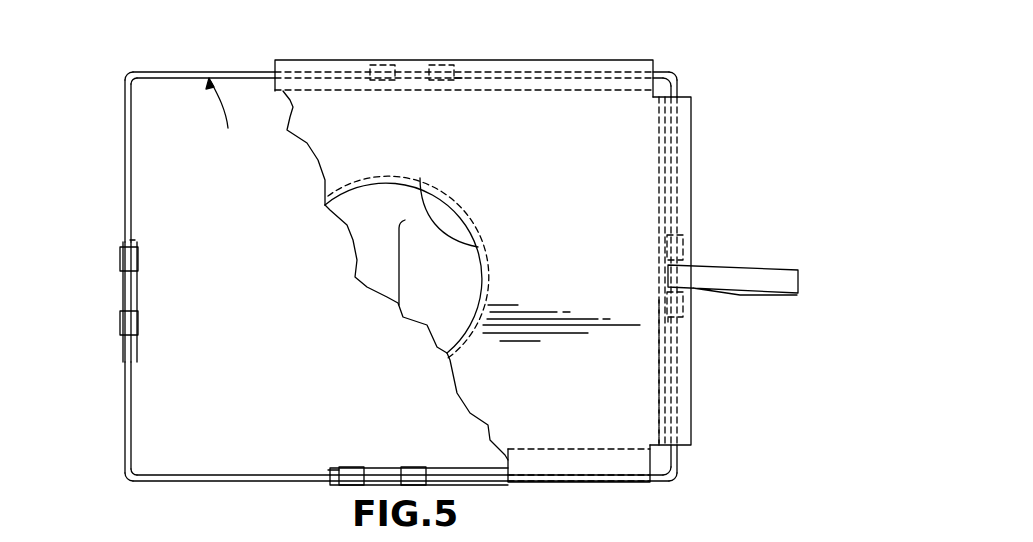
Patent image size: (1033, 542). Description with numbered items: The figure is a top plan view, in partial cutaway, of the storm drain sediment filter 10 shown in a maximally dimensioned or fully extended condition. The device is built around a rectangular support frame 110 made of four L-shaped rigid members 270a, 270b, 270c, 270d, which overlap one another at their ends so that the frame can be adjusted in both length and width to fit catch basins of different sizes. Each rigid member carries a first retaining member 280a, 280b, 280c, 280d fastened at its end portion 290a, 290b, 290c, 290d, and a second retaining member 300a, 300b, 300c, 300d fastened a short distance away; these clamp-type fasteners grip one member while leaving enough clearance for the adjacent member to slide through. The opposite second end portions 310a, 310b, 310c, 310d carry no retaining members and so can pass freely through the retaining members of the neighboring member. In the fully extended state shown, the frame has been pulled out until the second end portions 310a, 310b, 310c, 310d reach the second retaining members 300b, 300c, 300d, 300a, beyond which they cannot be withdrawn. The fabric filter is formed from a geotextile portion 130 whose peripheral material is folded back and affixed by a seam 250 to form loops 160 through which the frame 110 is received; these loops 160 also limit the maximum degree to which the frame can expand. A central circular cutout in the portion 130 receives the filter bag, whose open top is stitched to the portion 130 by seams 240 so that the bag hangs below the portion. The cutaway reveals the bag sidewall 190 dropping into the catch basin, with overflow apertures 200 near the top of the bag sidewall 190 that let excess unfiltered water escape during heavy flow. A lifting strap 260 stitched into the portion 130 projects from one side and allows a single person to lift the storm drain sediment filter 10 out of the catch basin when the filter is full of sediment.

The storm drain sediment filter 10 is at (718, 173).
The support frame 110 is at (677, 67).
The portion 130 is at (596, 291).
The loops 160 is at (688, 410).
The bag sidewall 190 is at (398, 200).
The overflow apertures 200 is at (467, 241).
The seams 240 is at (362, 172).
The seam 250 is at (657, 373).
The lifting straps 260 is at (800, 275).
The L-shaped rigid member 270a is at (127, 478).
The L-shaped rigid member 270b is at (147, 72).
The L-shaped rigid member 270c is at (678, 87).
The L-shaped rigid member 270d is at (683, 468).
The first retaining member 280a is at (413, 467).
The first retaining member 280b is at (138, 320).
The first retaining member 280c is at (383, 62).
The first retaining member 280d is at (684, 248).
The end portion 290a is at (448, 485).
The end portion 290b is at (125, 342).
The end portion 290c is at (367, 70).
The end portion 290d is at (680, 233).
The second retaining member 300a is at (349, 467).
The second retaining member 300b is at (140, 257).
The second retaining member 300c is at (442, 62).
The second retaining member 300d is at (690, 305).
The second end portion 310a is at (133, 241).
The second end portion 310b is at (462, 78).
The second end portion 310c is at (670, 320).
The second end portion 310d is at (333, 470).